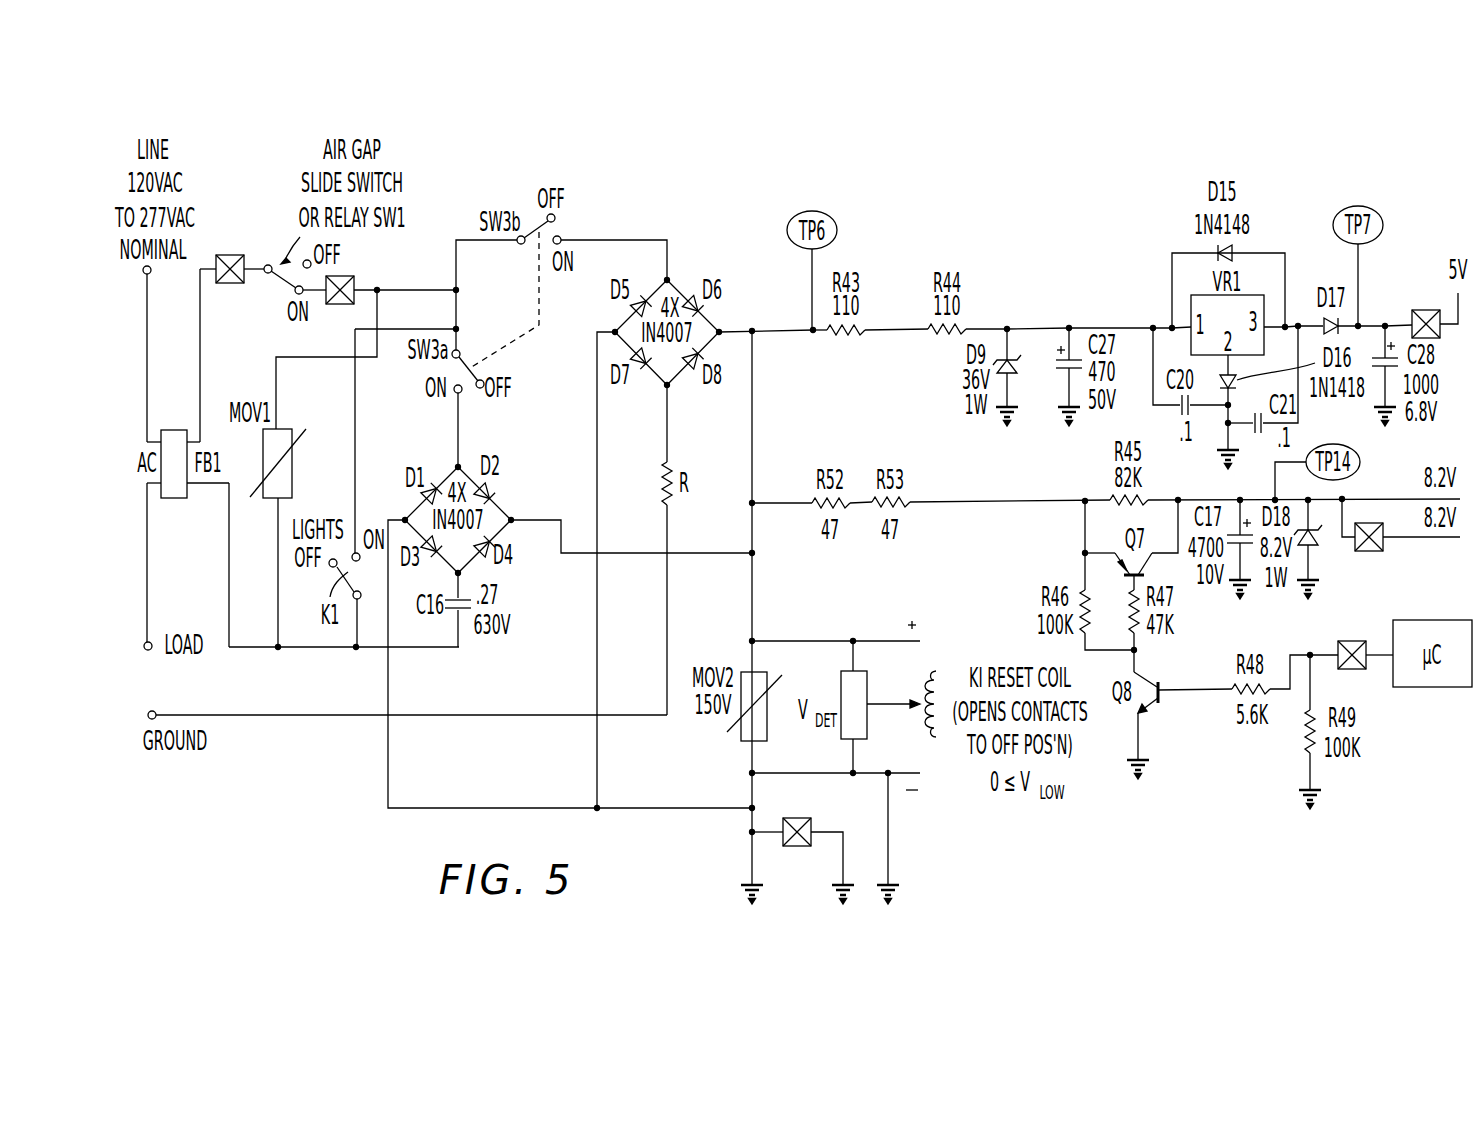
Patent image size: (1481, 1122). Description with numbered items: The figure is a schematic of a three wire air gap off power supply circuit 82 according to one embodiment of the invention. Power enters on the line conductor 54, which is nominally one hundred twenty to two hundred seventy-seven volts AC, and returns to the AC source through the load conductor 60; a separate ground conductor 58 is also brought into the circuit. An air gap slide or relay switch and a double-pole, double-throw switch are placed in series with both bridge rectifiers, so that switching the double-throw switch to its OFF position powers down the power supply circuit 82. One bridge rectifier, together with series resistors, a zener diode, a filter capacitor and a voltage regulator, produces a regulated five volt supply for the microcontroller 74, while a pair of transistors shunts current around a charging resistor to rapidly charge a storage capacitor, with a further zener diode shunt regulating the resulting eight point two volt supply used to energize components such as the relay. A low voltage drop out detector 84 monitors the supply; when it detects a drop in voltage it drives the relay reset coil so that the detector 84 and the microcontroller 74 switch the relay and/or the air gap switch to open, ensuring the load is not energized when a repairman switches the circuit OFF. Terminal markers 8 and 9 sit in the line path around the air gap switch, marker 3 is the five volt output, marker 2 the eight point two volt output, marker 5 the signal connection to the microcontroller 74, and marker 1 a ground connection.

The line conductor 54 is at (147, 310).
The load conductor 60 is at (147, 555).
The ground conductor 58 is at (248, 716).
The power supply circuit 82 is at (947, 228).
The low voltage drop out detector 84 is at (871, 683).
The microcontroller 74 is at (1452, 688).
The connector terminal 8 is at (230, 285).
The connector terminal 9 is at (340, 306).
The connector terminal 1 is at (797, 849).
The connector terminal 2 is at (1369, 556).
The connector terminal 3 is at (1426, 309).
The connector terminal 5 is at (1352, 673).